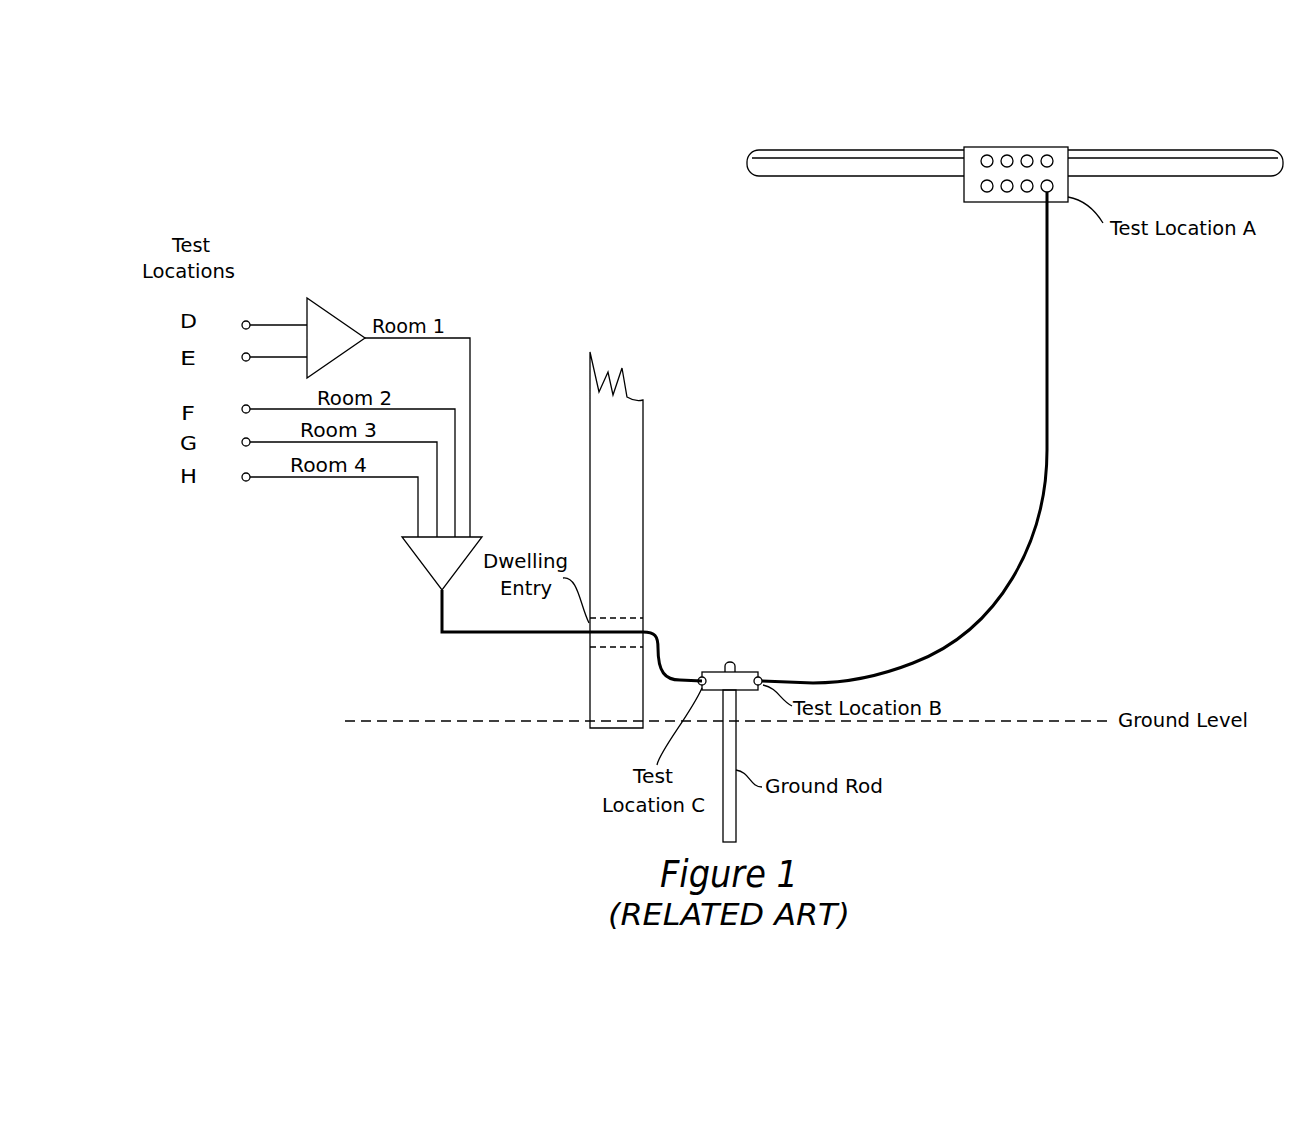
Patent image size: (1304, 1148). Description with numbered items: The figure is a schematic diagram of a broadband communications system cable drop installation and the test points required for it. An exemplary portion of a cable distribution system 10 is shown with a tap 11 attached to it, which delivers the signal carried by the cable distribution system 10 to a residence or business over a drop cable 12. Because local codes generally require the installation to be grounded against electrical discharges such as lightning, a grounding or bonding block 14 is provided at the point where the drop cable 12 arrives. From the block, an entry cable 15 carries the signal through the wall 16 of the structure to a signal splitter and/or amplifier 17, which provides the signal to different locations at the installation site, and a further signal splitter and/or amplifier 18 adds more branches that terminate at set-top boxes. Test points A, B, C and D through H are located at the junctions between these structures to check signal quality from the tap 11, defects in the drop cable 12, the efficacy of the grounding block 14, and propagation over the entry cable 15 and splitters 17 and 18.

The cable distribution system 10 is at (1113, 152).
The tap 11 is at (964, 203).
The drop cable 12 is at (1047, 413).
The grounding or bonding block 14 is at (752, 671).
The entry cable 15 is at (531, 634).
The wall 16 is at (643, 420).
The signal splitter and/or amplifier 17 is at (421, 562).
The further signal splitter and/or amplifier 18 is at (350, 296).